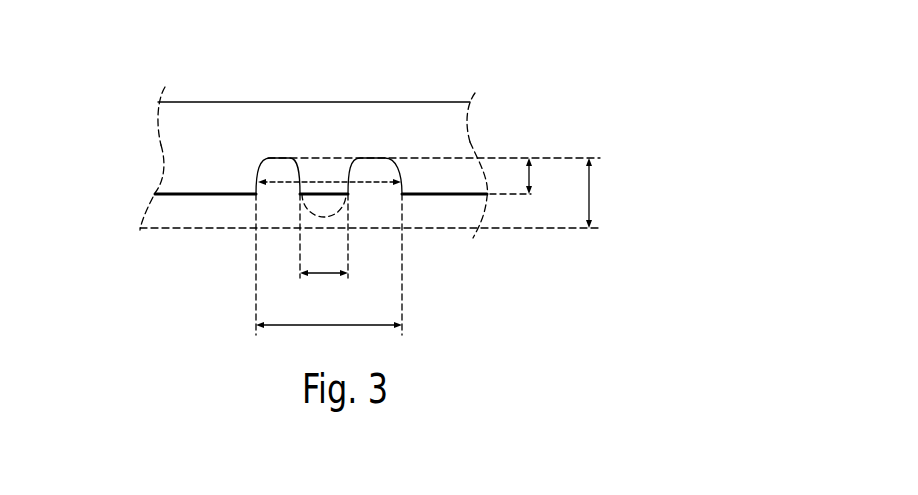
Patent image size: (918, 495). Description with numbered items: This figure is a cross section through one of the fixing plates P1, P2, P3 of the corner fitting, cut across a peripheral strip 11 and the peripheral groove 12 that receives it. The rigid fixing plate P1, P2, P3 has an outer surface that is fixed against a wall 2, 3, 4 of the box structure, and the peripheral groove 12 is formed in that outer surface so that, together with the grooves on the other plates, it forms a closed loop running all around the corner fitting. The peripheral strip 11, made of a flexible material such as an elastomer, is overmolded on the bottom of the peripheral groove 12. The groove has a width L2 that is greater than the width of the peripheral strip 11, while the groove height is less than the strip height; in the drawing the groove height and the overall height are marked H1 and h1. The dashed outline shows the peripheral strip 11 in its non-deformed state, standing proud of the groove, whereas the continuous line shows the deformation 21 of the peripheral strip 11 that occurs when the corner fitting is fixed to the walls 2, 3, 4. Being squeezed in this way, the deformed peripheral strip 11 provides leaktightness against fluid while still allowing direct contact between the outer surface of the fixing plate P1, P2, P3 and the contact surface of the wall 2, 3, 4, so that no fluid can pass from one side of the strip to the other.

The peripheral groove 12 is at (277, 171).
The peripheral sealing strip 11 is at (317, 168).
The deformation 21 is at (348, 188).
The wall 2 is at (346, 230).
The wall 3 is at (346, 230).
The wall 4 is at (200, 208).
The fixing plate P1 is at (380, 86).
The fixing plate P2 is at (380, 86).
The fixing plate P3 is at (427, 132).
The height of bump H1 is at (530, 182).
The total height h1 is at (590, 197).
The width of the peripheral groove L2 is at (329, 257).